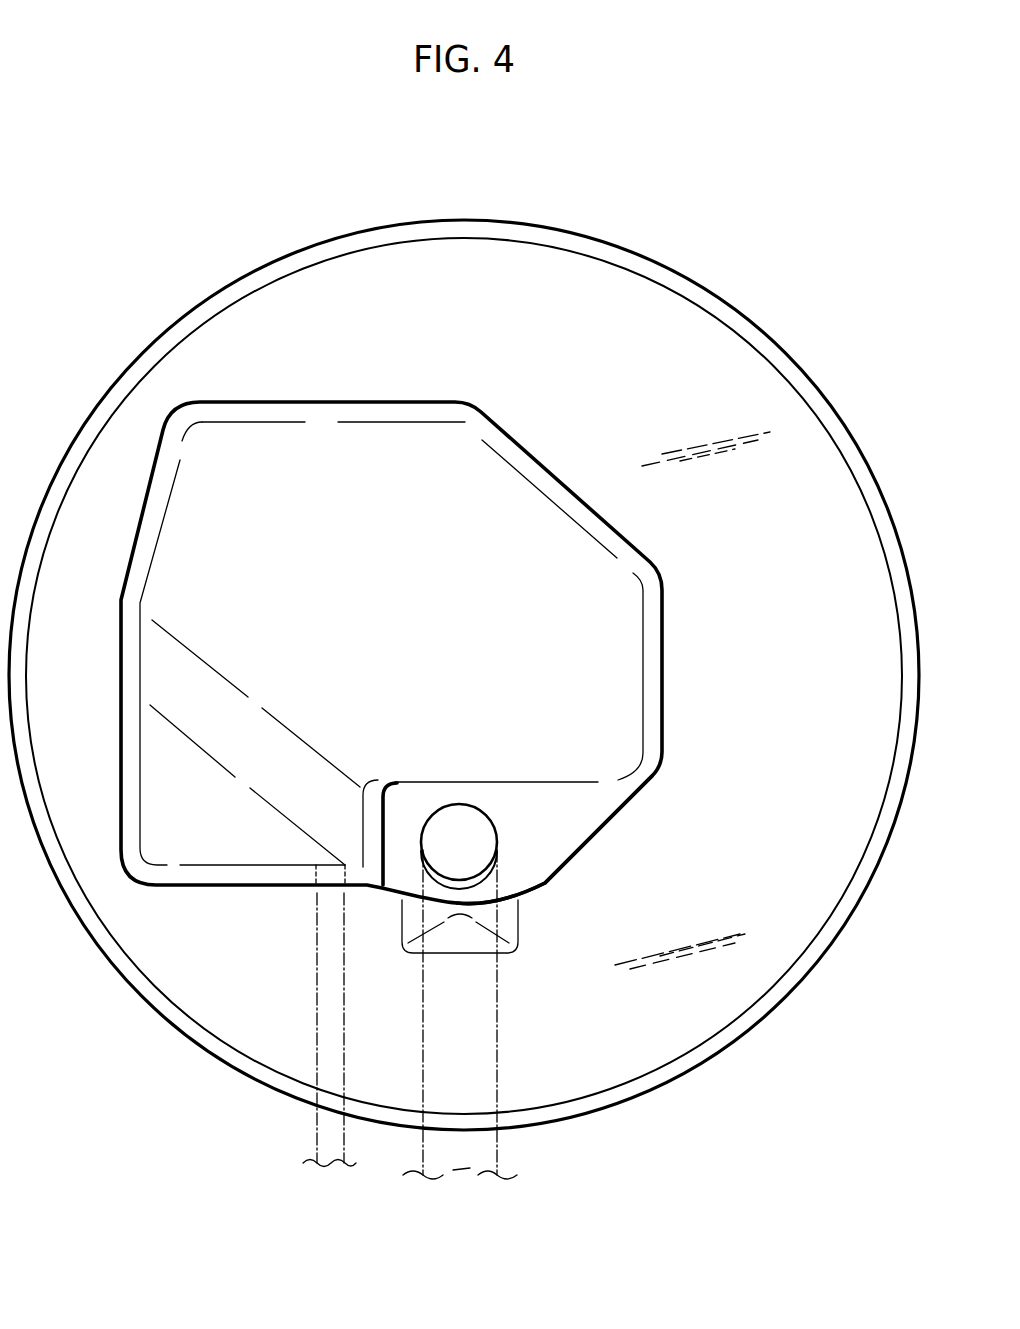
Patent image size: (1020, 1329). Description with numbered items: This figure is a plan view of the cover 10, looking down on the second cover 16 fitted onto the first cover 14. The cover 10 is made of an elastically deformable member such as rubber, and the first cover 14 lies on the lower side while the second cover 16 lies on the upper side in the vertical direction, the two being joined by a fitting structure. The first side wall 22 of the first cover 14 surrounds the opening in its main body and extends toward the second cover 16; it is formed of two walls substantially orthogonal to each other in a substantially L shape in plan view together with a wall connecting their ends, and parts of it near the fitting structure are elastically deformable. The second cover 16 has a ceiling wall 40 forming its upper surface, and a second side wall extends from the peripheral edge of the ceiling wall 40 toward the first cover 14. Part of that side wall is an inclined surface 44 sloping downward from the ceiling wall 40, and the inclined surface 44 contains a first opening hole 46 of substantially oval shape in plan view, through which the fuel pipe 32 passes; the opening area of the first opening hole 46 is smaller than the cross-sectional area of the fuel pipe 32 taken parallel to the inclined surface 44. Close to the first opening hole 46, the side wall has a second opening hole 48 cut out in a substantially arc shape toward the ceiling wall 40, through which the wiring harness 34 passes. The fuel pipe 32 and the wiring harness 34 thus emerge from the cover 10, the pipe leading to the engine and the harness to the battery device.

The cover 10 is at (678, 136).
The first cover 14 is at (653, 243).
The second cover 16 is at (562, 457).
The first side wall 22 is at (209, 895).
The fuel pipe 32 is at (497, 1010).
The wiring harness 34 is at (317, 1000).
The ceiling wall 40 is at (328, 533).
The inclined surface 44 is at (539, 836).
The first opening hole 46 is at (490, 824).
The second opening hole 48 is at (327, 877).